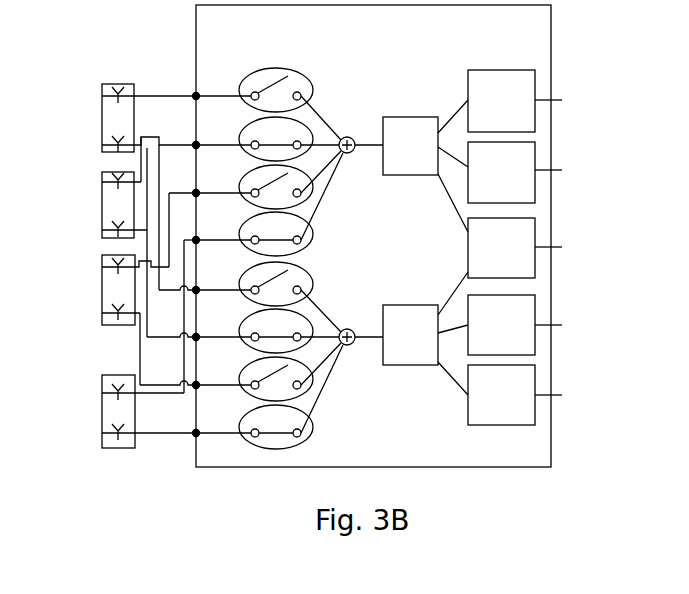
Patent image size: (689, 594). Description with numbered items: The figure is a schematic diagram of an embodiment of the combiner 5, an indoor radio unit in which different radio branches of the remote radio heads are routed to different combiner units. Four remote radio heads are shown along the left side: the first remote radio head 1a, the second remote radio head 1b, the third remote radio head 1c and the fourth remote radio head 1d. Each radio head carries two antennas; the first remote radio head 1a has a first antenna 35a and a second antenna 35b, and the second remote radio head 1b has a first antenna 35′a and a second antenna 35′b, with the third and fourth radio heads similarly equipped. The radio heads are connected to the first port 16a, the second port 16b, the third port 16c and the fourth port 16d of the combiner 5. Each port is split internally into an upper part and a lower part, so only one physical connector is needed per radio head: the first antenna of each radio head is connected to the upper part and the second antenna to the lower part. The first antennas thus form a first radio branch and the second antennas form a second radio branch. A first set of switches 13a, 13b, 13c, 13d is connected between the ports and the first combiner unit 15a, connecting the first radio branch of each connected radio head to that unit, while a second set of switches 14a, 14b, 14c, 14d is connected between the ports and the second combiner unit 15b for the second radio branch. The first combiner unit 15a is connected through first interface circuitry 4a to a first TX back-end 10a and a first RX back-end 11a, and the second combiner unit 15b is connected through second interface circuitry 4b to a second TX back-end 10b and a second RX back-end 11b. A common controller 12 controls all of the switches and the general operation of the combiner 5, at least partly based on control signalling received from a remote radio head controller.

The combiner 5 is at (383, 41).
The first remote radio head 1a is at (119, 84).
The second remote radio head 1b is at (103, 172).
The third remote radio head 1c is at (103, 255).
The fourth remote radio head 1d is at (103, 375).
The first antenna 35a is at (102, 96).
The second antenna 35b is at (102, 145).
The first antenna 35′a is at (102, 182).
The second antenna 35′b is at (102, 230).
The first port 16a is at (196, 96).
The second port 16b is at (196, 145).
The third port 16c is at (196, 193).
The fourth port 16d is at (196, 240).
The switch of first set 13a is at (296, 70).
The switch of first set 13b is at (310, 128).
The switch of first set 13c is at (315, 195).
The switch of first set 13d is at (318, 245).
The switch of second set 14a is at (307, 268).
The switch of second set 14b is at (322, 309).
The switch of second set 14c is at (325, 399).
The switch of second set 14d is at (318, 430).
The first combiner unit 15a is at (352, 153).
The second combiner unit 15b is at (357, 344).
The first interface circuitry 4a is at (426, 142).
The second interface circuitry 4b is at (426, 330).
The first TX back-end 10a is at (523, 101).
The first RX back-end 11a is at (523, 172).
The common controller 12 is at (516, 247).
The second TX back-end 10b is at (523, 324).
The second RX back-end 11b is at (523, 394).